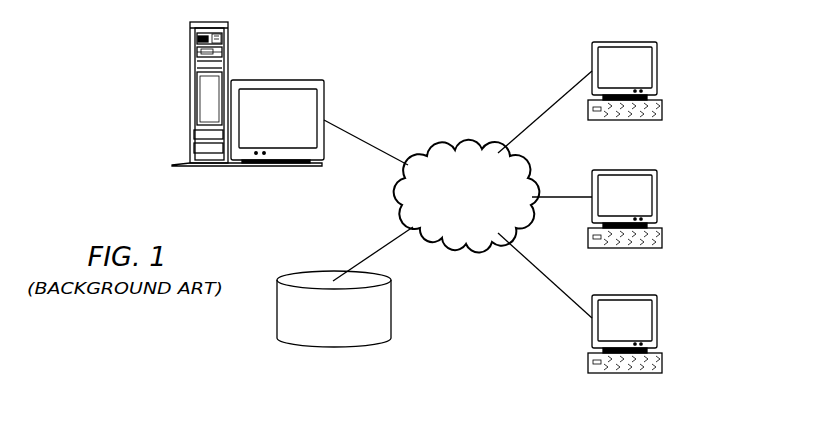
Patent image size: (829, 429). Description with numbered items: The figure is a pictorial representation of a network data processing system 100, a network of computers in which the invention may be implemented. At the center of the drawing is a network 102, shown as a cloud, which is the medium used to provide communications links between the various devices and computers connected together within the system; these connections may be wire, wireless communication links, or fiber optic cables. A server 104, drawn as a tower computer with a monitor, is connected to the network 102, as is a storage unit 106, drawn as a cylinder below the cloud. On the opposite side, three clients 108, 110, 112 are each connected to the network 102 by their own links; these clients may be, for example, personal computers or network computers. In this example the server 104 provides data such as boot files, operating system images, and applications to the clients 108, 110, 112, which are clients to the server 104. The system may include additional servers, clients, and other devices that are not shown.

The network data processing system 100 is at (508, 50).
The network 102 is at (468, 151).
The server 104 is at (190, 94).
The storage unit 106 is at (325, 347).
The client 108 is at (657, 68).
The client 110 is at (657, 197).
The client 112 is at (657, 320).